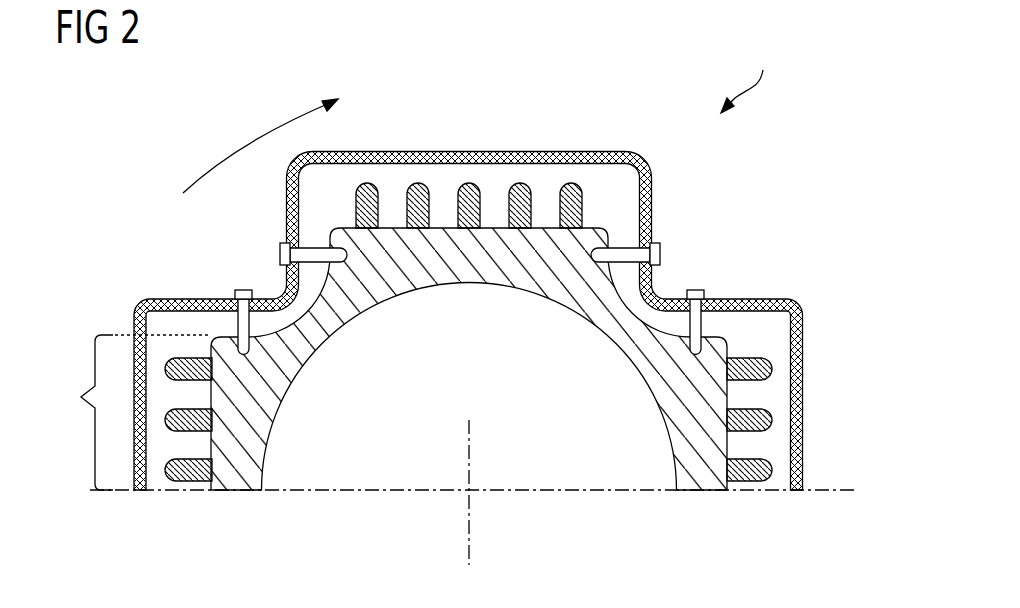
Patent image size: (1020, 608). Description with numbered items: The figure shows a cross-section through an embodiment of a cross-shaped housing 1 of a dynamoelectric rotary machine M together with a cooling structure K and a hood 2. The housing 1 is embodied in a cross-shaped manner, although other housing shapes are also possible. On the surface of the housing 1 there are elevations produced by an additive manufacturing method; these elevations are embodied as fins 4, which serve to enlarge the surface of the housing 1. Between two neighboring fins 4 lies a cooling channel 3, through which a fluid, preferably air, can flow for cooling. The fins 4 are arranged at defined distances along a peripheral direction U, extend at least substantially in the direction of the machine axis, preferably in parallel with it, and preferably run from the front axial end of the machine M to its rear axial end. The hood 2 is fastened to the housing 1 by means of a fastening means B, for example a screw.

The housing 1 is at (702, 480).
The hood 2 is at (805, 448).
The cooling channel 3 is at (781, 332).
The fins 4 is at (768, 366).
The fastening means B is at (662, 254).
The cooling structure K is at (134, 412).
The peripheral direction U is at (240, 150).
The dynamoelectric rotary machine M is at (751, 74).